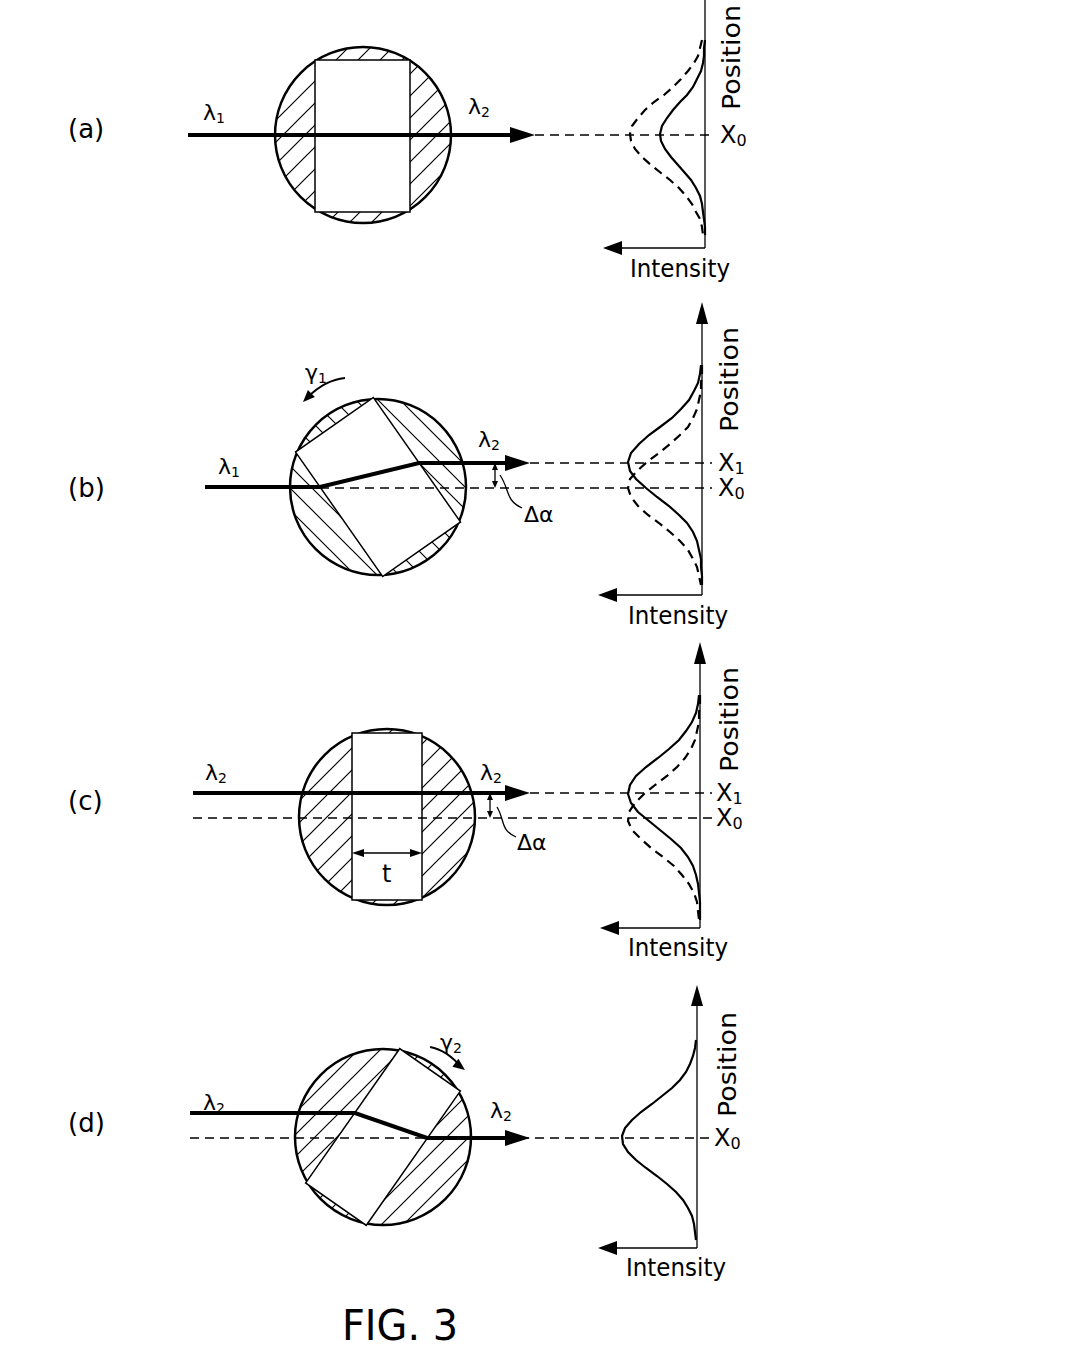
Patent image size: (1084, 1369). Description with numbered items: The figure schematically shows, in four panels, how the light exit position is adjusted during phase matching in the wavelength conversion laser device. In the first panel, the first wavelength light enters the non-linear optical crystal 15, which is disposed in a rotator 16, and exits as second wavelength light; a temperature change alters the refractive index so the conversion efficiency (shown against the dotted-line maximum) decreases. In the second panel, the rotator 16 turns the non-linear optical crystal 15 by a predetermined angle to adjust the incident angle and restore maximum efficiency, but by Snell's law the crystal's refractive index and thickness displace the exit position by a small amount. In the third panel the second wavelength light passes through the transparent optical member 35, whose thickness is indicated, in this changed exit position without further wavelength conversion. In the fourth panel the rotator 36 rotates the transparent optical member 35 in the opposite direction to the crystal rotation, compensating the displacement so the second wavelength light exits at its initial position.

The non-linear optical crystal 15 is at (310, 100).
The rotator 16 is at (288, 174).
The transparent optical member 35 is at (355, 862).
The rotator 36 is at (450, 880).